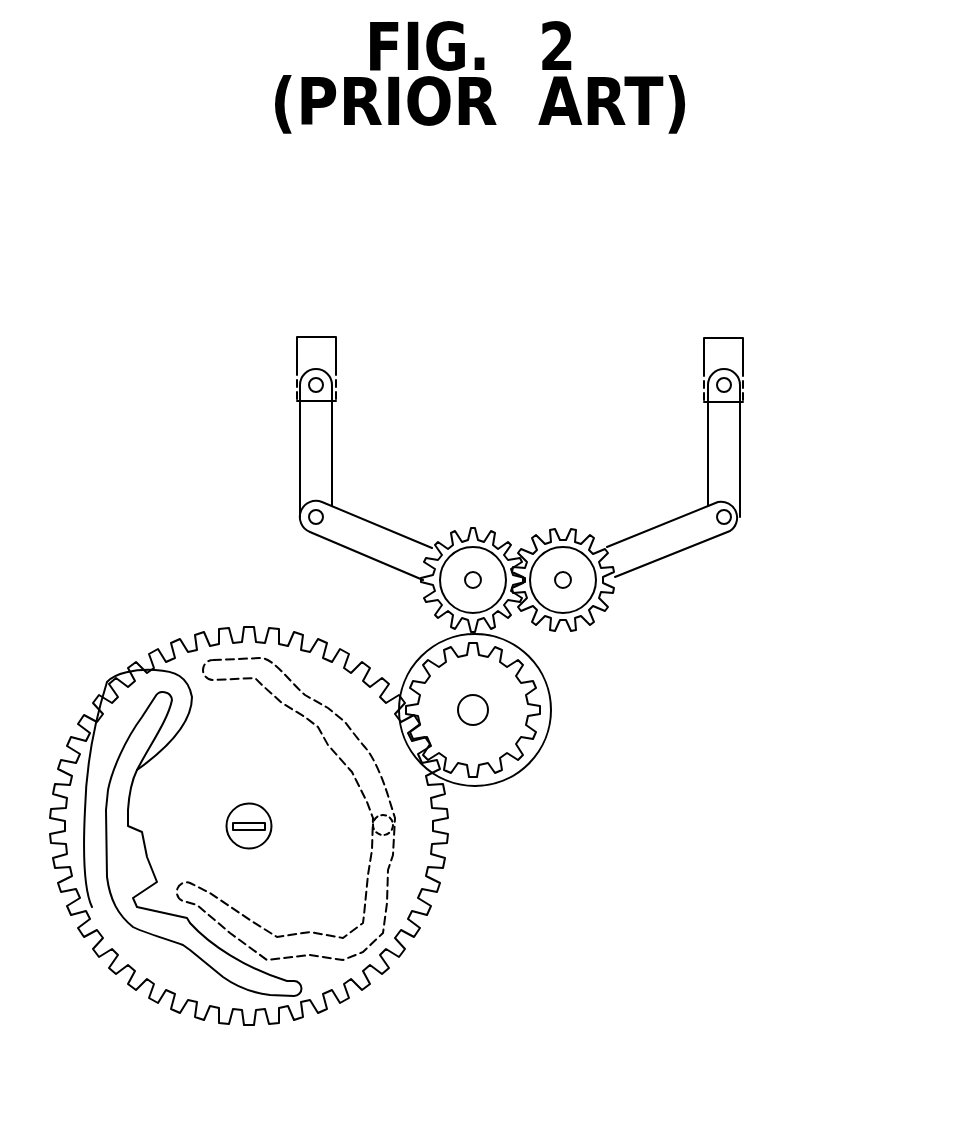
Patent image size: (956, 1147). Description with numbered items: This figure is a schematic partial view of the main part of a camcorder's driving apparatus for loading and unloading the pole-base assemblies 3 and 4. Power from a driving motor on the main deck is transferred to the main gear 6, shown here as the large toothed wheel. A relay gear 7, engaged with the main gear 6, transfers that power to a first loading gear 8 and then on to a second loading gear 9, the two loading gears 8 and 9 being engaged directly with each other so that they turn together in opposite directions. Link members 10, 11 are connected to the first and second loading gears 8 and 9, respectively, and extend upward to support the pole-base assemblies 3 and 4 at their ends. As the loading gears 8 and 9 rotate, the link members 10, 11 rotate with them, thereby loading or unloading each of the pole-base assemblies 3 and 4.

The pole-base assembly 3 is at (305, 353).
The pole-base assembly 4 is at (737, 355).
The main gear 6 is at (408, 890).
The relay gear 7 is at (497, 738).
The first loading gear 8 is at (482, 558).
The second loading gear 9 is at (565, 560).
The link member 10 is at (313, 455).
The link member 11 is at (731, 482).